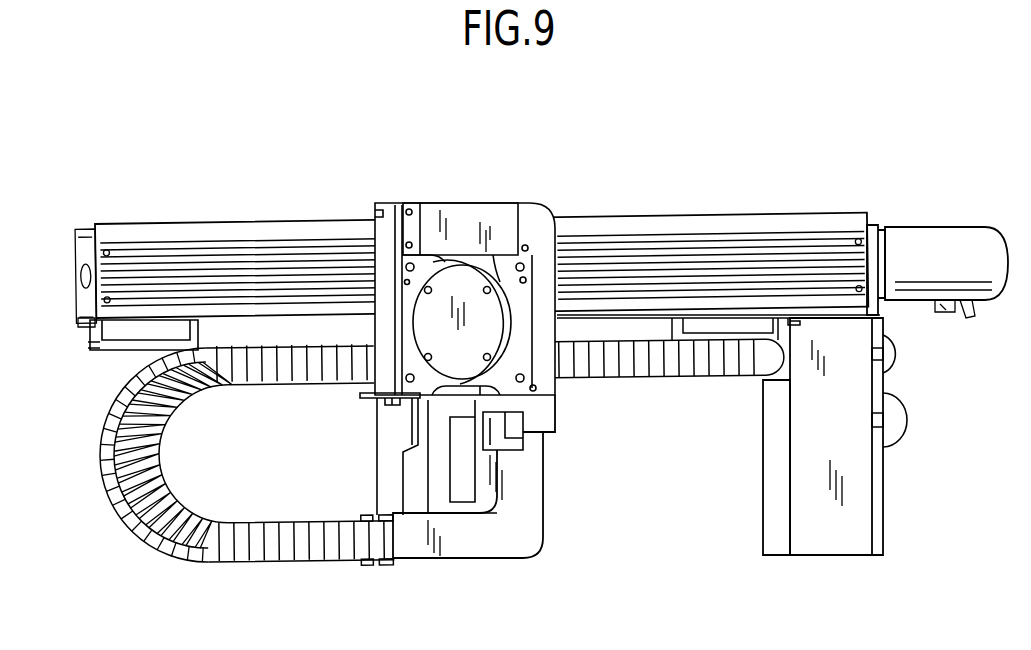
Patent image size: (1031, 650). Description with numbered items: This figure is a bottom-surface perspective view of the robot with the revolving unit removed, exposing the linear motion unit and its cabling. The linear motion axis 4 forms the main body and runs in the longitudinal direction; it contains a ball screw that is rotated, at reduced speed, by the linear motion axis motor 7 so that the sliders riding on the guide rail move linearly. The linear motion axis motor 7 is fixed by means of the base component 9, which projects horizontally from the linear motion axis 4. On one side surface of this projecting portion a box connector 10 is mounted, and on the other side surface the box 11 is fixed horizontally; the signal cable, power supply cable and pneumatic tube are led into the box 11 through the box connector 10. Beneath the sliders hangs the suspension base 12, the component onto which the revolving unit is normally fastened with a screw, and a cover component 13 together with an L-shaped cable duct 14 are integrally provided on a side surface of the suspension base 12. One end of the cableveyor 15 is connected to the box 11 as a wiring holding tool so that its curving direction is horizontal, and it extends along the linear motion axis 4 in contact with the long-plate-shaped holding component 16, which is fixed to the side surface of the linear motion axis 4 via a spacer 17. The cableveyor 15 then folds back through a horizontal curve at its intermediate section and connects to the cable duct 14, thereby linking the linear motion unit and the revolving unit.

The linear motion axis 4 is at (245, 222).
The linear motion axis motor 7 is at (934, 227).
The base component 9 is at (887, 482).
The box connector 10 is at (938, 421).
The box 11 is at (820, 558).
The suspension base 12 is at (458, 203).
The cover component 13 is at (378, 462).
The L-shaped cable duct 14 is at (543, 482).
The cableveyor 15 is at (277, 555).
The holding component 16 is at (128, 351).
The spacer 17 is at (90, 341).